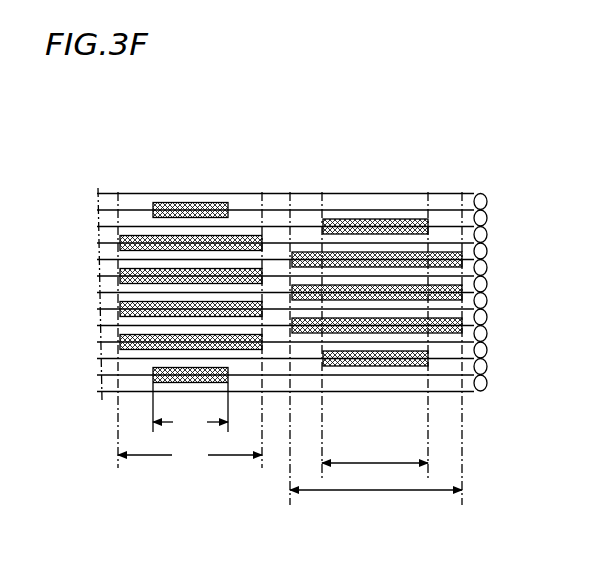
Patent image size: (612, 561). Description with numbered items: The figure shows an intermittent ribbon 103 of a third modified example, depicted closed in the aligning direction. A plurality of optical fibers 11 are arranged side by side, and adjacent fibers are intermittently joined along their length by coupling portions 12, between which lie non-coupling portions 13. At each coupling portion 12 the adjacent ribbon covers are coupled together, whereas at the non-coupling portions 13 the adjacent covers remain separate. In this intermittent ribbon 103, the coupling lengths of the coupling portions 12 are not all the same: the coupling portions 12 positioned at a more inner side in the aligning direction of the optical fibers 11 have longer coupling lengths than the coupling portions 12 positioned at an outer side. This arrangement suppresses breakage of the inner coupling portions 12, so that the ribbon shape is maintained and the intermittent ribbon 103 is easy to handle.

The intermittent ribbon 103 is at (357, 138).
The optical fiber 11 is at (487, 218).
The coupling portion 12 is at (205, 203).
The non-coupling portion 13 is at (136, 209).